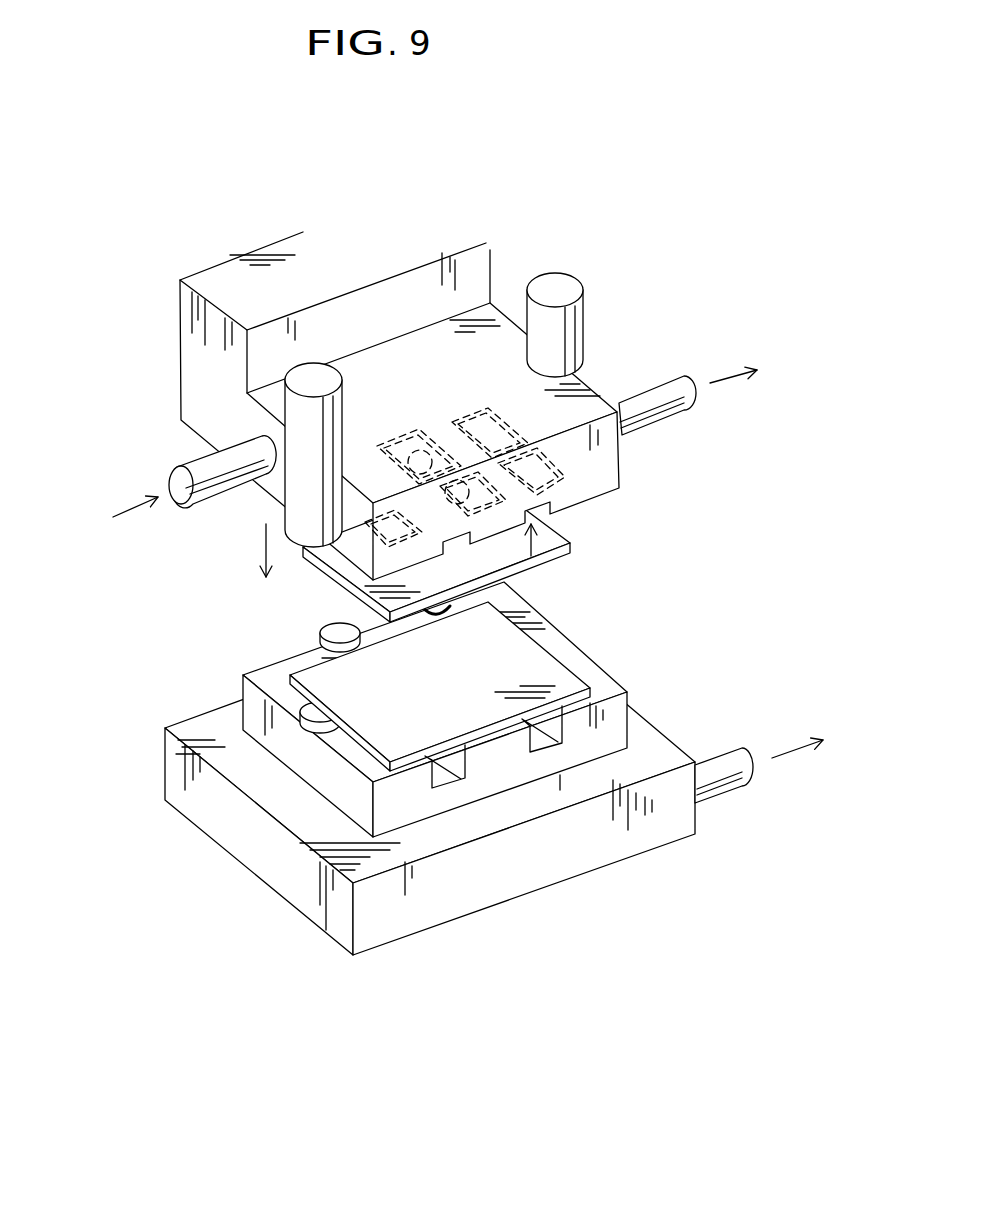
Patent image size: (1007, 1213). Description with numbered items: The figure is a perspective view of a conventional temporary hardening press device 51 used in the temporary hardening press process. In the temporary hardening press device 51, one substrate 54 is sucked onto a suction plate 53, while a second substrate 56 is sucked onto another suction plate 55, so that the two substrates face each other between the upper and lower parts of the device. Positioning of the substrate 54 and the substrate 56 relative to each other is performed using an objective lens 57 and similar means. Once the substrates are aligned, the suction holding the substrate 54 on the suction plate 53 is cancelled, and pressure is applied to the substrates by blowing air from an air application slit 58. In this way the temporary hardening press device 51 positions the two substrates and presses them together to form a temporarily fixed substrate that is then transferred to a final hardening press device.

The temporary hardening press device 51 is at (155, 402).
The suction plate 53 is at (621, 488).
The substrate 54 is at (567, 541).
The suction plate 55 is at (615, 727).
The substrate 56 is at (577, 672).
The objective lens 57 is at (585, 346).
The air application slit 58 is at (476, 420).